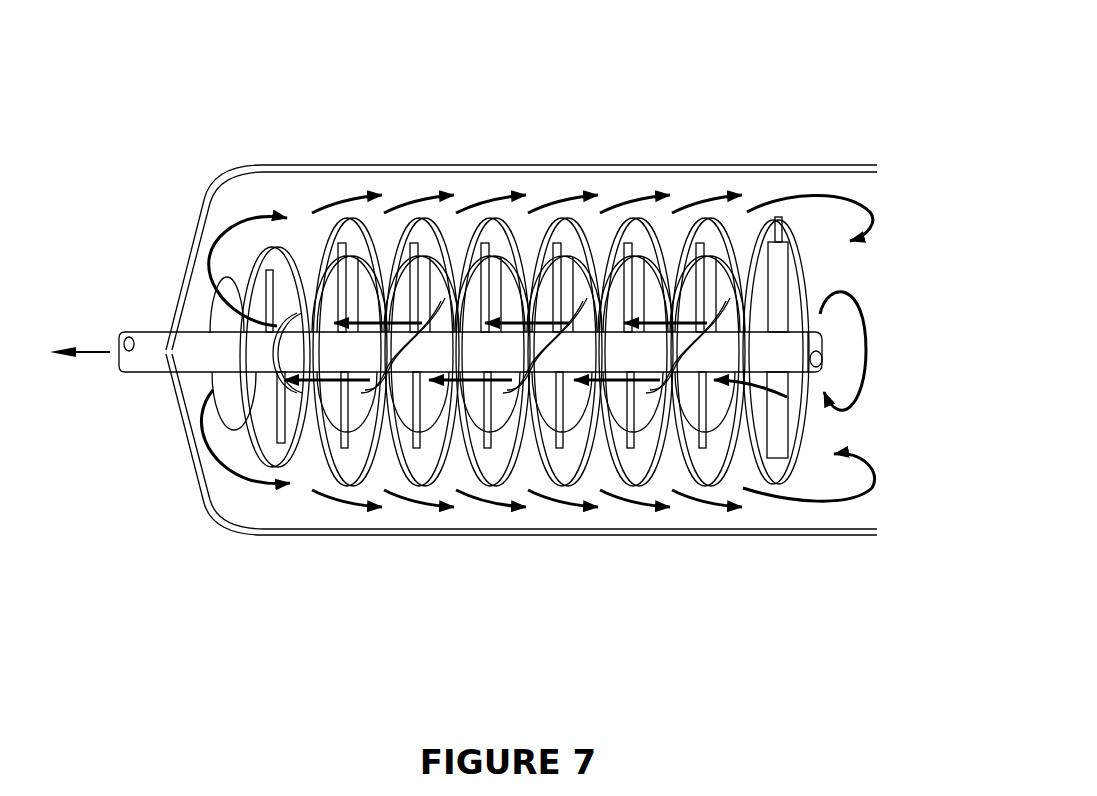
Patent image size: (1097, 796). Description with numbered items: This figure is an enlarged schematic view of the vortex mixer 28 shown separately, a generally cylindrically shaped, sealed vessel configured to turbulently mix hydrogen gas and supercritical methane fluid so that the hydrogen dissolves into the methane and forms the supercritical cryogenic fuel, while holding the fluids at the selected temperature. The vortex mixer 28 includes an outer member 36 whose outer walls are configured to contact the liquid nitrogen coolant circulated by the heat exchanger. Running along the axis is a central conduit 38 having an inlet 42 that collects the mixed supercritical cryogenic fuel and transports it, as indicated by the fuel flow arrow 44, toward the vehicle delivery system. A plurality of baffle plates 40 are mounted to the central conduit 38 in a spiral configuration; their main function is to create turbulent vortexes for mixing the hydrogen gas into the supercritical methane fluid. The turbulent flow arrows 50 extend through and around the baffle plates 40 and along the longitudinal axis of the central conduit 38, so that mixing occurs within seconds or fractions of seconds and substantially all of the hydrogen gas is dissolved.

The vortex mixer 28 is at (612, 535).
The outer member 36 is at (850, 165).
The central conduit 38 is at (150, 332).
The baffle plates 40 is at (272, 290).
The inlet 42 is at (801, 362).
The fuel flow arrow 44 is at (88, 353).
The turbulent flow arrows 50 is at (234, 245).